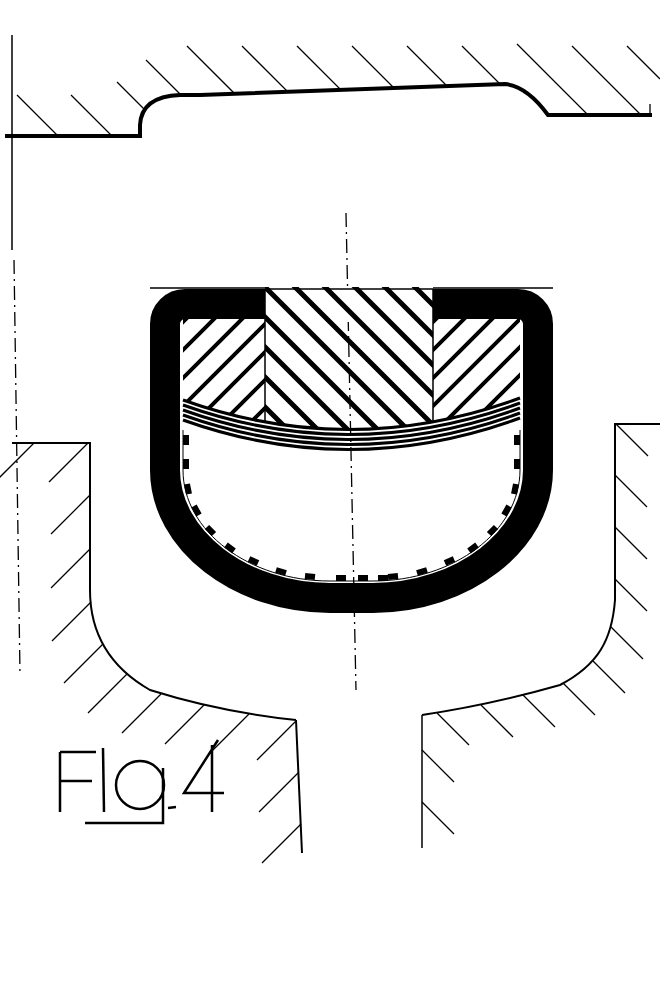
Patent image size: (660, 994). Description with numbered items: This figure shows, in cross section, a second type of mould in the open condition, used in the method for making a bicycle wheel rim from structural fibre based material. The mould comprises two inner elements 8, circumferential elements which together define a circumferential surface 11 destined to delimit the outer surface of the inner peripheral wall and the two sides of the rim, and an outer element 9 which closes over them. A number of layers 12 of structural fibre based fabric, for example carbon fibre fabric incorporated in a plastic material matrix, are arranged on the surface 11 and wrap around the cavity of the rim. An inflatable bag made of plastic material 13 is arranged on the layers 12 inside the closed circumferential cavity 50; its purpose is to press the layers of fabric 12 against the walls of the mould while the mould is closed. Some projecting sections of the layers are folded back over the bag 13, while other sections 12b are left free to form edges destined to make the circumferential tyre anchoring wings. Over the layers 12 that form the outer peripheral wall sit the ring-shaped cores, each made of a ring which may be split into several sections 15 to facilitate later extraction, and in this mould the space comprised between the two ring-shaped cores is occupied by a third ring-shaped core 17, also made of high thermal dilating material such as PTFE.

The inner element 8 is at (64, 443).
The outer element 9 is at (273, 95).
The circumferential surface 11 is at (217, 708).
The layers of structural fibre based fabric 12 is at (364, 612).
The free edges of the layers 12b is at (242, 290).
The inflatable bag 13 is at (300, 573).
The ring sections of the cores 15 is at (233, 377).
The third ring-shaped core 17 is at (375, 305).
The closed circumferential cavity 50 is at (412, 518).